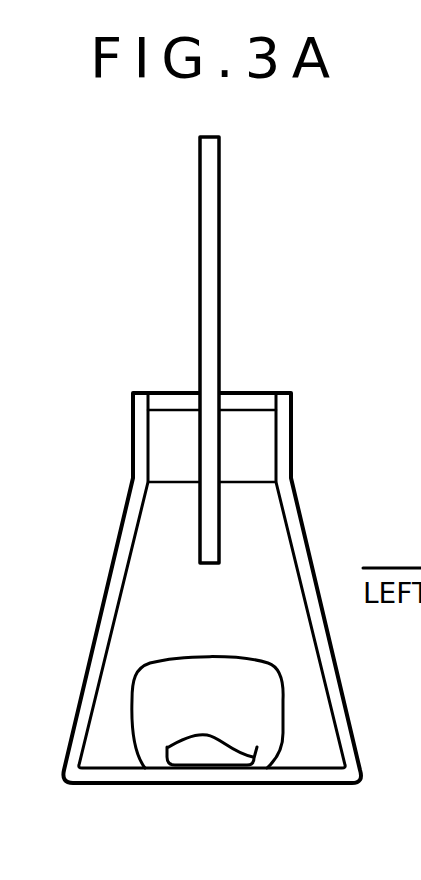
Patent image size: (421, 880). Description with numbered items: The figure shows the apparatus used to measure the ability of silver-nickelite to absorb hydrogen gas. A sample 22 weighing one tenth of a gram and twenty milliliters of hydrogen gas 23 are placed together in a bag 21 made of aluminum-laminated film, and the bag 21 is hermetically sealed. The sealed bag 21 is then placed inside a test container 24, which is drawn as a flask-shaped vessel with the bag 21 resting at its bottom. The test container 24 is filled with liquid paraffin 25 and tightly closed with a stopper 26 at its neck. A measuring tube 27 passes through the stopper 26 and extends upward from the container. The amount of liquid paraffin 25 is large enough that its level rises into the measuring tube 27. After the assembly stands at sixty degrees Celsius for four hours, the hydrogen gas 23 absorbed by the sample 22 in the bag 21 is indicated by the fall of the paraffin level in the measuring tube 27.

The bag 21 is at (283, 692).
The sample 22 is at (203, 753).
The hydrogen gas 23 is at (247, 725).
The test container 24 is at (292, 505).
The liquid paraffin 25 is at (255, 565).
The stopper 26 is at (245, 445).
The measuring tube 27 is at (219, 182).